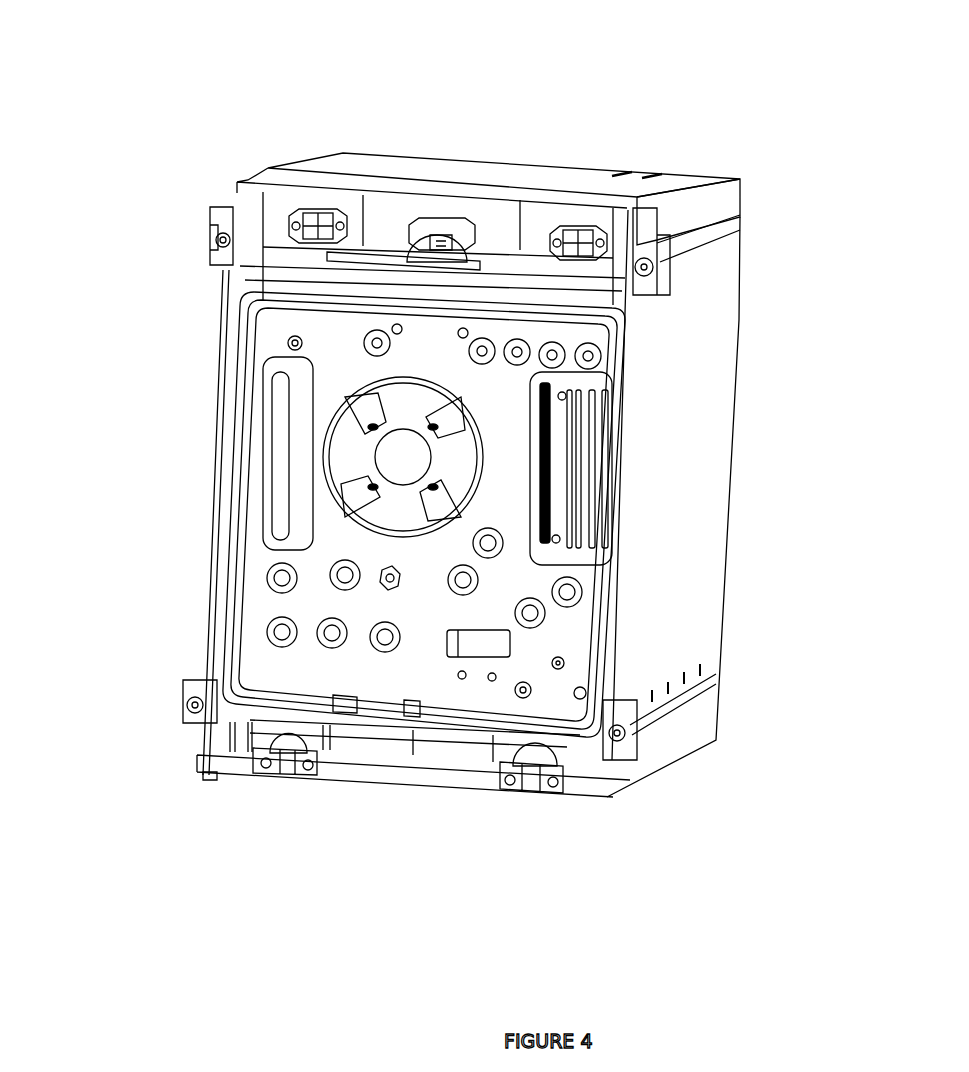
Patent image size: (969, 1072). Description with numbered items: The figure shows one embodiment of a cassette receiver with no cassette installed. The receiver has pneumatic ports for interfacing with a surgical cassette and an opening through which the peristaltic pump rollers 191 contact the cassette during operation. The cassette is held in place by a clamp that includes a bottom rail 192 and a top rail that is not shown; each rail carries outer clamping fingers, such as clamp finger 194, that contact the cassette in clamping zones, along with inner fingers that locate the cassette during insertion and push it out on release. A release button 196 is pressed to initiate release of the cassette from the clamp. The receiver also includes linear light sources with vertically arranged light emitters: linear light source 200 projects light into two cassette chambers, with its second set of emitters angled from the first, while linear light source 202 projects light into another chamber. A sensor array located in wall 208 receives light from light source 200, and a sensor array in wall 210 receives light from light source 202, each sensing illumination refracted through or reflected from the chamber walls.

The release button 196 is at (455, 223).
The peristaltic pump rollers 191 is at (355, 412).
The wall 210 is at (242, 432).
The linear light source 202 is at (274, 465).
The wall 208 is at (553, 428).
The linear light source 200 is at (582, 508).
The clamp finger 194 is at (382, 712).
The bottom rail 192 is at (411, 712).